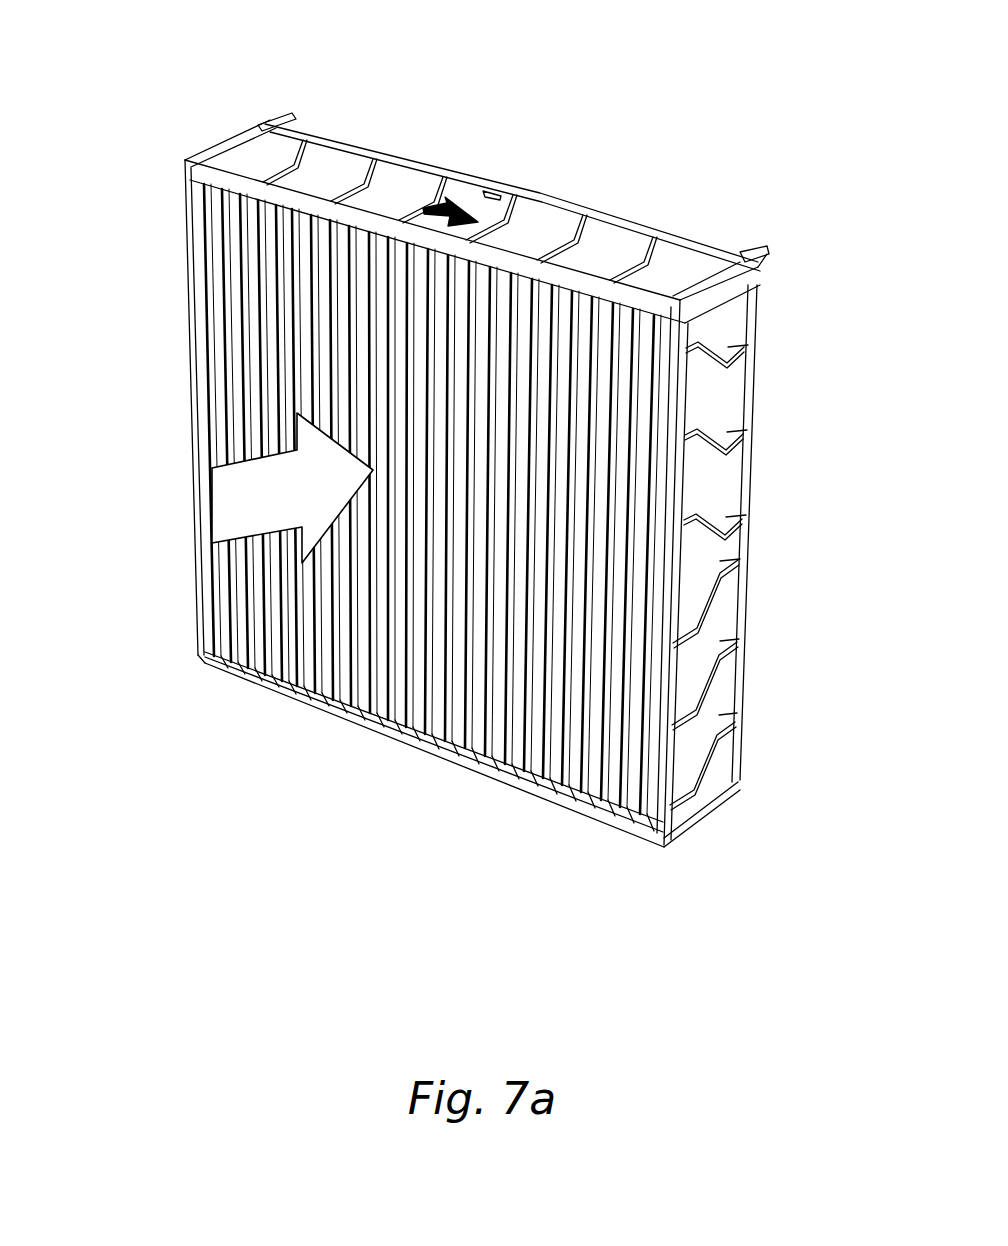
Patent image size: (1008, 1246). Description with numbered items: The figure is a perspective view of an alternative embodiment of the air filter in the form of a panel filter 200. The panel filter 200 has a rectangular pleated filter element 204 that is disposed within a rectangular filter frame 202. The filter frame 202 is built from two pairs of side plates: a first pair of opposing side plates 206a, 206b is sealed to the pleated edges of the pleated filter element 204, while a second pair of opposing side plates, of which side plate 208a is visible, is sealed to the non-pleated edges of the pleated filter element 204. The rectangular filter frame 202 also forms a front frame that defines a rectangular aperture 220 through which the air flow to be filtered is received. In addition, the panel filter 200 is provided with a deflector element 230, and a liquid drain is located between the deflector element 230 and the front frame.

The panel filter 200 is at (209, 122).
The filter frame 202 is at (253, 128).
The pleated filter element 204 is at (255, 632).
The side plate 206a is at (388, 742).
The side plate 206b is at (508, 237).
The side plate 208a is at (190, 392).
The rectangular aperture 220 is at (650, 727).
The deflector element 230 is at (525, 783).